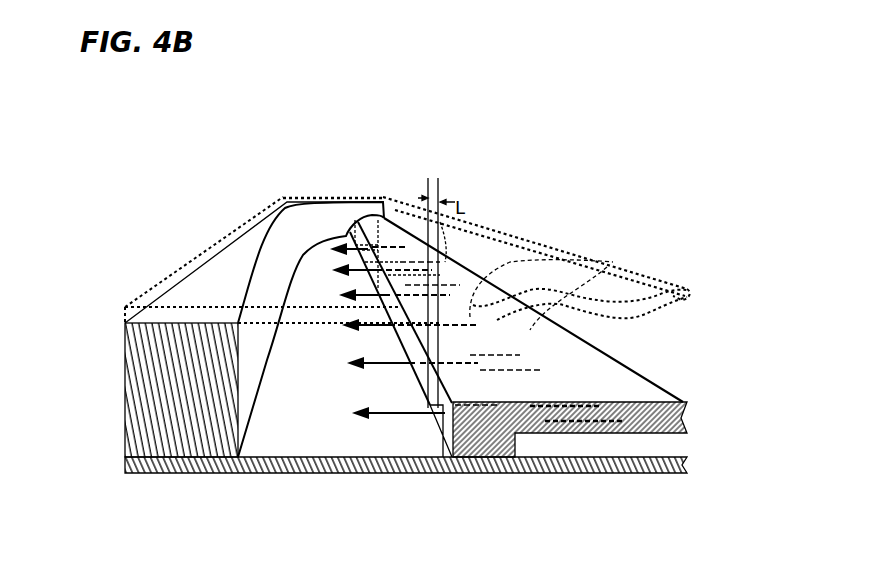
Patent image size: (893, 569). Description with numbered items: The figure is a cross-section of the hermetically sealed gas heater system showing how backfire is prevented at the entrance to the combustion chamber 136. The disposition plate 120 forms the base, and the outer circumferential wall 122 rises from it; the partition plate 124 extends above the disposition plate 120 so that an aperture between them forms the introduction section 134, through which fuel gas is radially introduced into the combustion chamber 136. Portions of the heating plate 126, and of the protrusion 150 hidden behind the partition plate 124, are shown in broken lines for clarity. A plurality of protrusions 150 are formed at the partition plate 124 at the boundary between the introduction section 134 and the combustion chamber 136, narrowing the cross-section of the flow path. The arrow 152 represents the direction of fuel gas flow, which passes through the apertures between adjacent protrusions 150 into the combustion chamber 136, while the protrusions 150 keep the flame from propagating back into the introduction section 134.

The disposition plate 120 is at (211, 474).
The outer circumferential wall 122 is at (153, 412).
The partition plate 124 is at (655, 387).
The heating plate 126 is at (165, 303).
The introduction section 134 is at (627, 456).
The combustion chamber 136 is at (306, 421).
The protrusion 150 is at (362, 294).
The arrow 152 is at (608, 266).